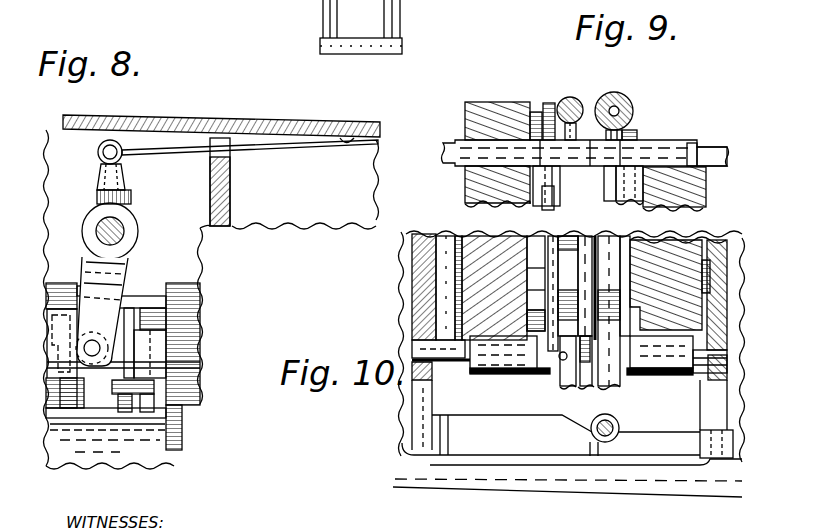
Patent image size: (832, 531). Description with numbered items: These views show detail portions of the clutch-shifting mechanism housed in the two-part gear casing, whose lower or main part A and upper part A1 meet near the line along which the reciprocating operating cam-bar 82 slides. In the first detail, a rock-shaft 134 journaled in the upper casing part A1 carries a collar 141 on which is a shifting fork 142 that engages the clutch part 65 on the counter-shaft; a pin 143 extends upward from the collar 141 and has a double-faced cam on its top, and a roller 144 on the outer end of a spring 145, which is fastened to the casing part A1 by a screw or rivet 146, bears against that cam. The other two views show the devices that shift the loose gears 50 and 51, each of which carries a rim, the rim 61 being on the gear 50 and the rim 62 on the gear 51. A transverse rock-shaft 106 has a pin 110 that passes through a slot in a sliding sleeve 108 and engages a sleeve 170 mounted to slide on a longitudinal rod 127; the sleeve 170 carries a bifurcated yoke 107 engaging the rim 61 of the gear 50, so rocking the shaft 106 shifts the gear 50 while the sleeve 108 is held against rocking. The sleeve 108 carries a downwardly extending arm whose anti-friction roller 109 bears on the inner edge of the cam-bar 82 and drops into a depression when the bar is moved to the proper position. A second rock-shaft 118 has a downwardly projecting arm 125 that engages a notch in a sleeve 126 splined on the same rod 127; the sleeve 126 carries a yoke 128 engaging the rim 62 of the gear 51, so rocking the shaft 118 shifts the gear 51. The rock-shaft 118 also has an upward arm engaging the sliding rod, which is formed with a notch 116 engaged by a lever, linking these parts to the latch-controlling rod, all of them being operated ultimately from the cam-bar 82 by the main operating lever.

In FIG. 8, the upper part of gear casing A1 is at (240, 122).
In FIG. 8, the spring 145 is at (250, 144).
In FIG. 8, the screw or rivet 146 is at (348, 145).
In FIG. 8, the roller 144 is at (116, 142).
In FIG. 8, the pin 143 is at (128, 182).
In FIG. 8, the collar 141 is at (92, 218).
In FIG. 8, the rock-shaft 134 is at (118, 236).
In FIG. 8, the shifting fork 142 is at (100, 320).
In FIG. 8, the clutch part 65 is at (95, 385).
In FIG. 9, the gear 51 is at (482, 101).
In FIG. 10, the gear 51 is at (492, 232).
In FIG. 9, the rim 62 is at (546, 102).
In FIG. 9, the rock-shaft 118 is at (563, 97).
In FIG. 10, the rock-shaft 118 is at (567, 388).
In FIG. 9, the downwardly projecting arm 125 is at (582, 118).
In FIG. 9, the rock-shaft 106 is at (628, 100).
In FIG. 10, the rock-shaft 106 is at (600, 396).
In FIG. 9, the sliding sleeve 108 is at (613, 92).
In FIG. 10, the sliding sleeve 108 is at (622, 382).
In FIG. 9, the notch 116 is at (626, 124).
In FIG. 9, the pin 110 is at (638, 136).
In FIG. 9, the sleeve 170 is at (692, 152).
In FIG. 9, the longitudinal rod 127 is at (739, 152).
In FIG. 10, the longitudinal rod 127 is at (427, 370).
In FIG. 9, the gear 50 is at (690, 193).
In FIG. 10, the gear 50 is at (680, 252).
In FIG. 9, the rim 61 is at (628, 202).
In FIG. 10, the rim 61 is at (618, 272).
In FIG. 9, the yoke 107 is at (616, 180).
In FIG. 9, the sleeve 126 is at (560, 180).
In FIG. 10, the sleeve 126 is at (503, 374).
In FIG. 9, the yoke 128 is at (556, 198).
In FIG. 10, the yoke 128 is at (565, 230).
In FIG. 10, the operating cam-bar 82 is at (523, 438).
In FIG. 10, the anti-friction roller 109 is at (620, 432).
In FIG. 10, the lower or main part of gear casing A is at (432, 480).